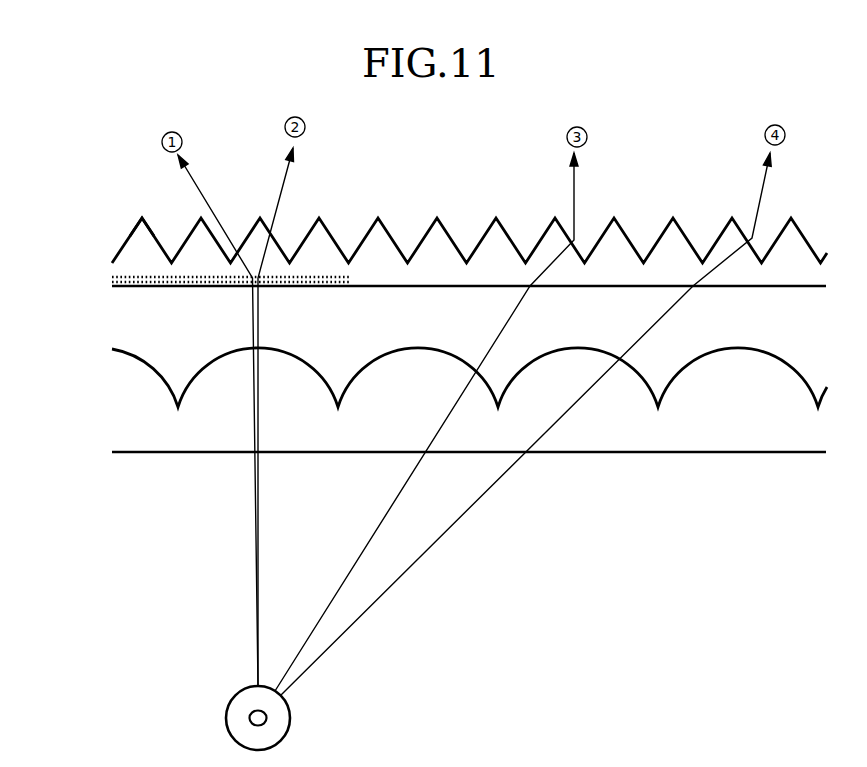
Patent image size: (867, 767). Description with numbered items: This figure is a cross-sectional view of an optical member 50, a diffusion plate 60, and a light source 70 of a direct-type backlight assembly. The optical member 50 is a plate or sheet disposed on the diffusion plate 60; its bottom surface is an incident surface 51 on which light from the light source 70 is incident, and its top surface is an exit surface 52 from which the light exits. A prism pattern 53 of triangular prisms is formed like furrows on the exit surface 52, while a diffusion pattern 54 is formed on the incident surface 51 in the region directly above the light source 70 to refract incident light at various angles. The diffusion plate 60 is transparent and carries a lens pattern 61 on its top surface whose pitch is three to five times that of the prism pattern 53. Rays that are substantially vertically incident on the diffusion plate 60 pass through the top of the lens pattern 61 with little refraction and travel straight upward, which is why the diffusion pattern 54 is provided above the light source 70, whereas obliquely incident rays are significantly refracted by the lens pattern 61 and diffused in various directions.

The optical member 50 is at (50, 213).
The incident surface 51 is at (133, 286).
The exit surface 52 is at (137, 224).
The prism pattern 53 is at (141, 249).
The diffusion pattern 54 is at (200, 287).
The diffusion plate 60 is at (717, 441).
The lens pattern 61 is at (637, 375).
The light sources 70 is at (290, 716).